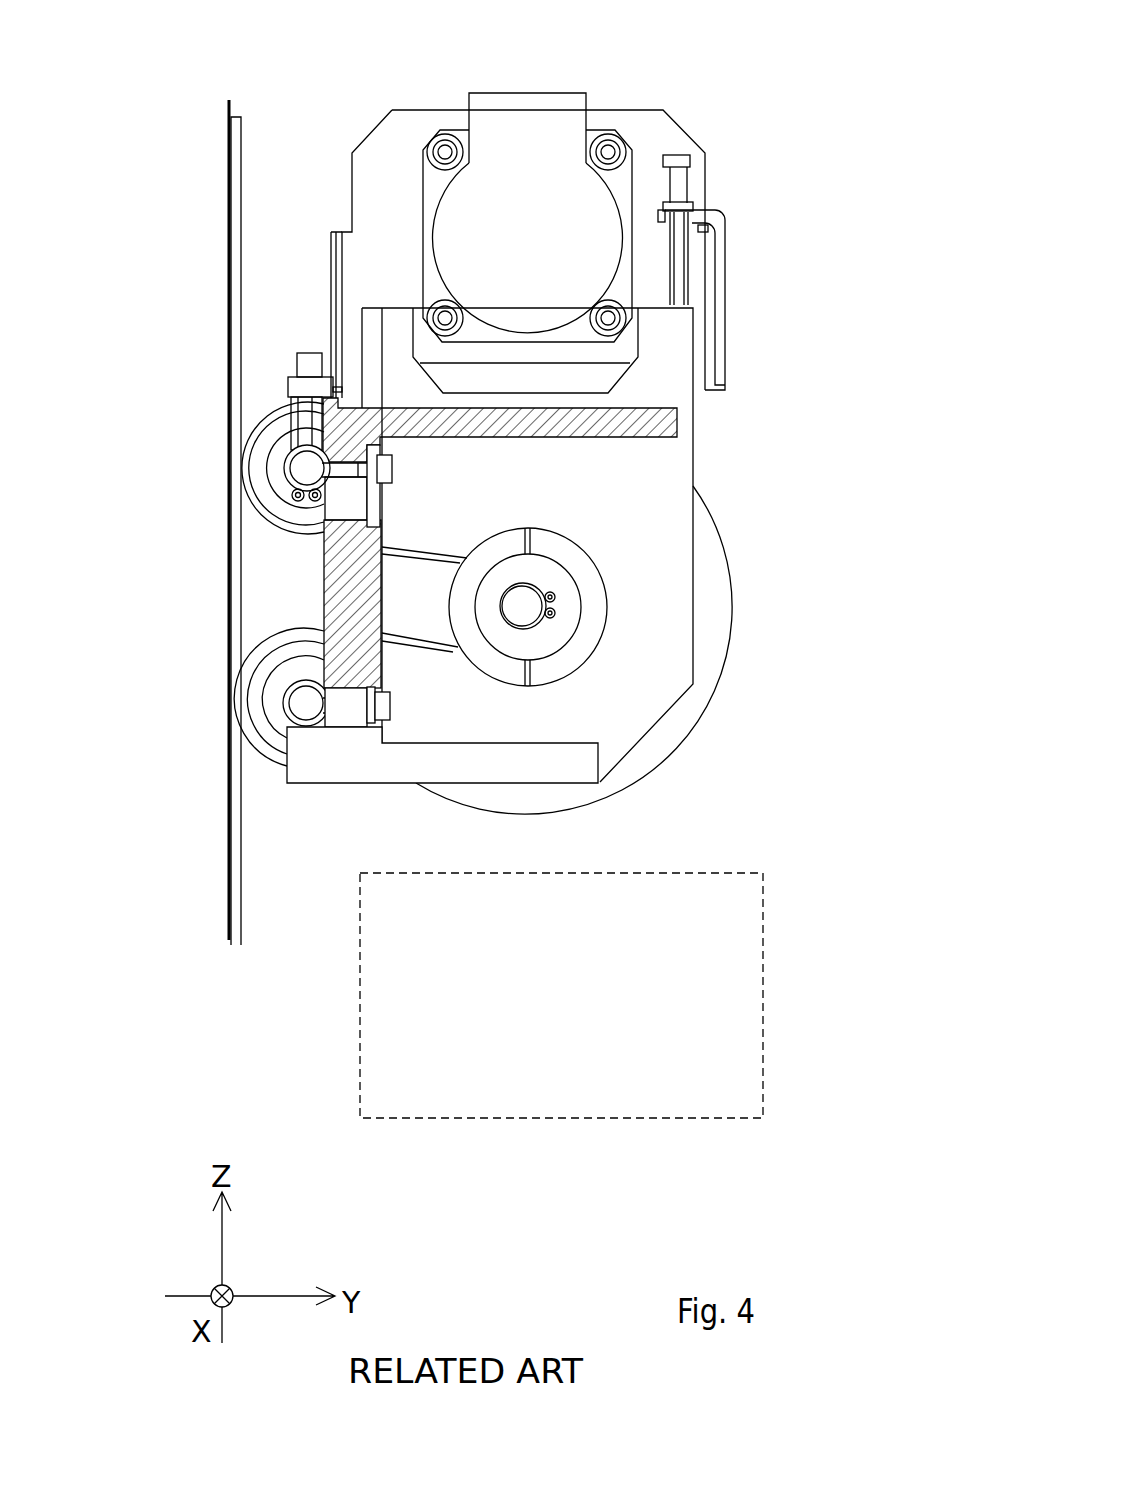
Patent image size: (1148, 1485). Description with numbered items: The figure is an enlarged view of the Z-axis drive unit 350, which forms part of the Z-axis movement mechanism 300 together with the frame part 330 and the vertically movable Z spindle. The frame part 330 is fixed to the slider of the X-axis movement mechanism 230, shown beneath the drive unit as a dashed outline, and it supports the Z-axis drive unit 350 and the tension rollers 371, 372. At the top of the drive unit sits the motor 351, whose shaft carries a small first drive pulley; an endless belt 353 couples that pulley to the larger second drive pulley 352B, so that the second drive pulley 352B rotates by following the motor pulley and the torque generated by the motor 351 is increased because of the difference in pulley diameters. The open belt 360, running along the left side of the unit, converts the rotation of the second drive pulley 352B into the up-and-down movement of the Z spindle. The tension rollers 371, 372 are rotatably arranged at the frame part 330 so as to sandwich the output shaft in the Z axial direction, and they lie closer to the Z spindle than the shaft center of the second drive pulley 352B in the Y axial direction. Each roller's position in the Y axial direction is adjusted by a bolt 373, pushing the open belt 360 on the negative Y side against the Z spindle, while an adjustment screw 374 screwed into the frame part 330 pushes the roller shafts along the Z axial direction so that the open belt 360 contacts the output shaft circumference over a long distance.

The Z-axis movement mechanism 300 is at (668, 72).
The motor 351 is at (577, 182).
The Z-axis drive unit 350 is at (750, 205).
The open belt 360 is at (240, 288).
The adjustment screw 374 is at (303, 351).
The tension roller 371 is at (262, 455).
The tension roller 372 is at (255, 685).
The bolt 373 is at (390, 718).
The endless belt 353 is at (712, 532).
The second drive pulley 352B is at (718, 600).
The frame part 330 is at (665, 692).
The X-axis movement mechanism 230 is at (710, 872).